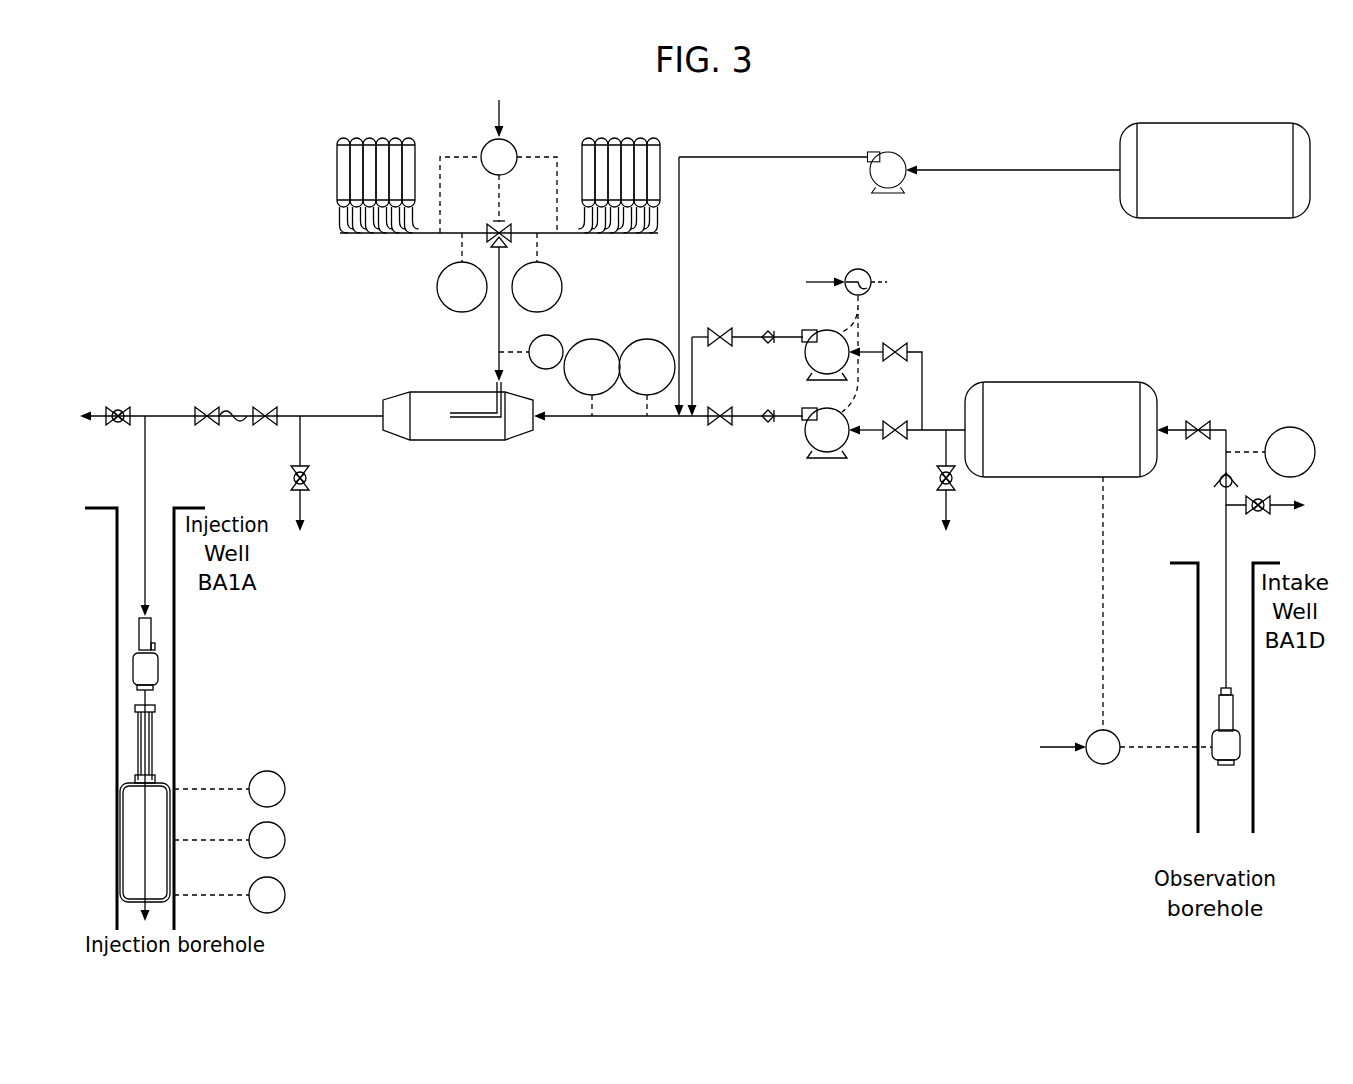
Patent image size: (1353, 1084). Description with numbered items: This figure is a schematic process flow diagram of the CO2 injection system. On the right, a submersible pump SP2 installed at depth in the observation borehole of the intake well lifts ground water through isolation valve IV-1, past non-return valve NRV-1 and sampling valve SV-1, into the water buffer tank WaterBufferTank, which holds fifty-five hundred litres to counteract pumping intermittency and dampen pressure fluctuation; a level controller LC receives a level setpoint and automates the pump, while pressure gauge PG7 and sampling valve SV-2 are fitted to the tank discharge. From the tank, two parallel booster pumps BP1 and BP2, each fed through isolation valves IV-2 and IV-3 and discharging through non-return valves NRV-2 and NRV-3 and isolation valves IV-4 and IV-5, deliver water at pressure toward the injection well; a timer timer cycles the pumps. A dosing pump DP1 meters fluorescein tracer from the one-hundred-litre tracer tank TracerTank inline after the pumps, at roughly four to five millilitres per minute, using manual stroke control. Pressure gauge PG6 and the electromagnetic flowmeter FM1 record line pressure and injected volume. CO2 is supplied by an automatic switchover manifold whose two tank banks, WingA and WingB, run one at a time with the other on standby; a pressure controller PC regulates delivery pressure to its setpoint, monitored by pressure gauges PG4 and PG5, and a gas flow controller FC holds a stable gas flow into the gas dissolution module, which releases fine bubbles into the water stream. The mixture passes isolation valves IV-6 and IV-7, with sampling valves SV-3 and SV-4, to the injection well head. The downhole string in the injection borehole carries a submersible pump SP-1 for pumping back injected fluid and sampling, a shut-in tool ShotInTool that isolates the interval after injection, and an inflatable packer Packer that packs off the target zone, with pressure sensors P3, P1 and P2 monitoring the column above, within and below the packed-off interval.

The primary manifold wing WingA is at (377, 168).
The standby manifold wing WingB is at (614, 168).
The pressure controller PC is at (498, 156).
The pressure gauge 4 PG4 is at (462, 272).
The pressure gauge 5 PG5 is at (537, 272).
The pressure gauge 6 PG6 is at (647, 377).
The pressure gauge 7 PG7 is at (1270, 452).
The gas flow controller FC is at (531, 352).
The water flowmeter FM1 is at (592, 377).
The dosing pump DP1 is at (899, 222).
The booster pump BP1 is at (825, 447).
The booster pump BP2 is at (822, 369).
The isolation valve 1 IV-1 is at (1198, 444).
The isolation valve 2 IV-2 is at (897, 452).
The isolation valve 3 IV-3 is at (897, 374).
The isolation valve 4 IV-4 is at (720, 401).
The isolation valve 5 IV-5 is at (720, 322).
The isolation valve 6 IV-6 is at (265, 432).
The isolation valve 7 IV-7 is at (207, 432).
The non-return valve 1 NRV-1 is at (1191, 495).
The non-return valve 2 NRV-2 is at (770, 431).
The non-return valve 3 NRV-3 is at (770, 352).
The sampling valve 1 SV-1 is at (1265, 522).
The sampling valve 2 SV-2 is at (976, 480).
The sampling valve 3 SV-3 is at (328, 473).
The sampling valve 4 SV-4 is at (116, 433).
The element timer is at (864, 333).
The tracer tank TracerTank is at (1215, 170).
The water buffer tank WaterBufferTank is at (1061, 429).
The level controller LC is at (1106, 747).
The submersible pump SP2 is at (1226, 745).
The submersible pump SP-1 is at (163, 675).
The shut-in tool ShotInTool is at (163, 748).
The packer Packer is at (155, 851).
The pressure sensor P1 is at (229, 840).
The pressure sensor P2 is at (229, 895).
The pressure sensor P3 is at (229, 789).